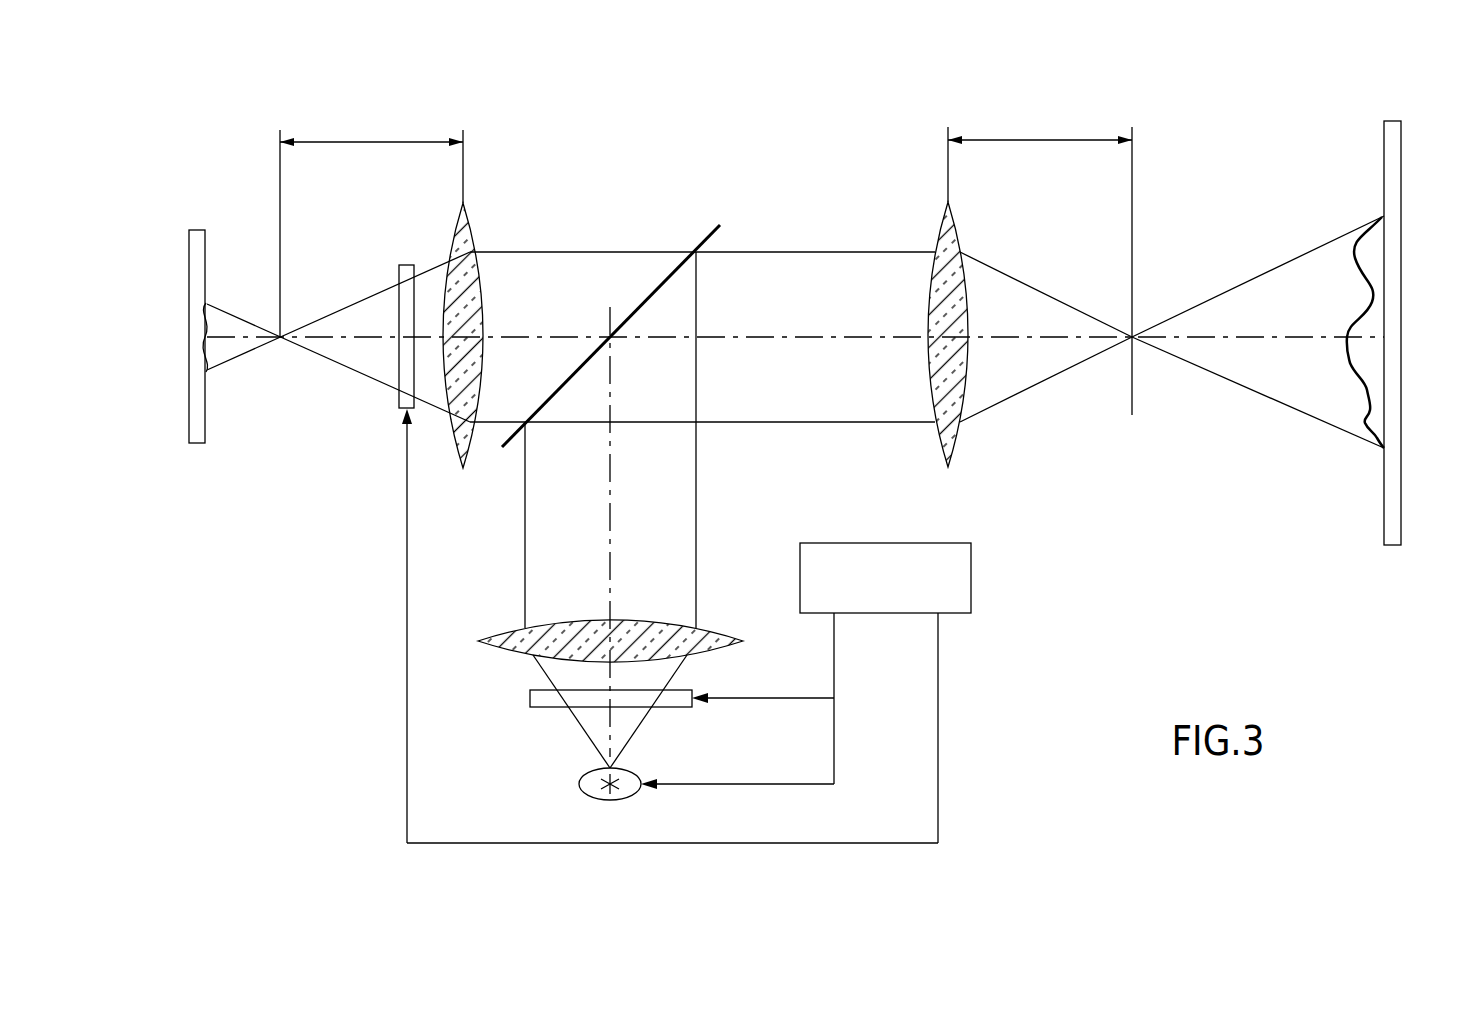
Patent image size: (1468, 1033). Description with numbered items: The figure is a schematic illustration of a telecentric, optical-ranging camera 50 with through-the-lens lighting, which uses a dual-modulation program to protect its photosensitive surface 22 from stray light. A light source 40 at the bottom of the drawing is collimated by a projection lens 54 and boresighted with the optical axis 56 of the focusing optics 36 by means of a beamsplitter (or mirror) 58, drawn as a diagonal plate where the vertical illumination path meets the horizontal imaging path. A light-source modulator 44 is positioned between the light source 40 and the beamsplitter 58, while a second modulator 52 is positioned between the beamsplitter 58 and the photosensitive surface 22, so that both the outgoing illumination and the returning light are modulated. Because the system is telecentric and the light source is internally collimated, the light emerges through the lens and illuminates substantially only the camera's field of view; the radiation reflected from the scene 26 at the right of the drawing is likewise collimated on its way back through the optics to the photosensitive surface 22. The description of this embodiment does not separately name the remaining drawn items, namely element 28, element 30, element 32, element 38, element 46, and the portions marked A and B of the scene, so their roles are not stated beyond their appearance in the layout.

The photosensitive surface 22 is at (188, 352).
The scene 26 is at (1354, 258).
The optical axis 28 is at (654, 178).
The focal point 30 is at (1134, 300).
The second lens 32 is at (933, 235).
The focusing optics 36 is at (482, 238).
The focal point 38 is at (280, 340).
The light source 40 is at (580, 778).
The light-source modulator 44 is at (530, 697).
The controller 46 is at (971, 560).
The telecentric, optical-ranging camera 50 is at (221, 164).
The modulator 52 is at (396, 272).
The projection lens 54 is at (500, 632).
The optical axis 56 is at (350, 335).
The beamsplitter 58 is at (562, 382).
The wavefront portion A is at (1370, 293).
The wavefront portion B is at (1348, 345).